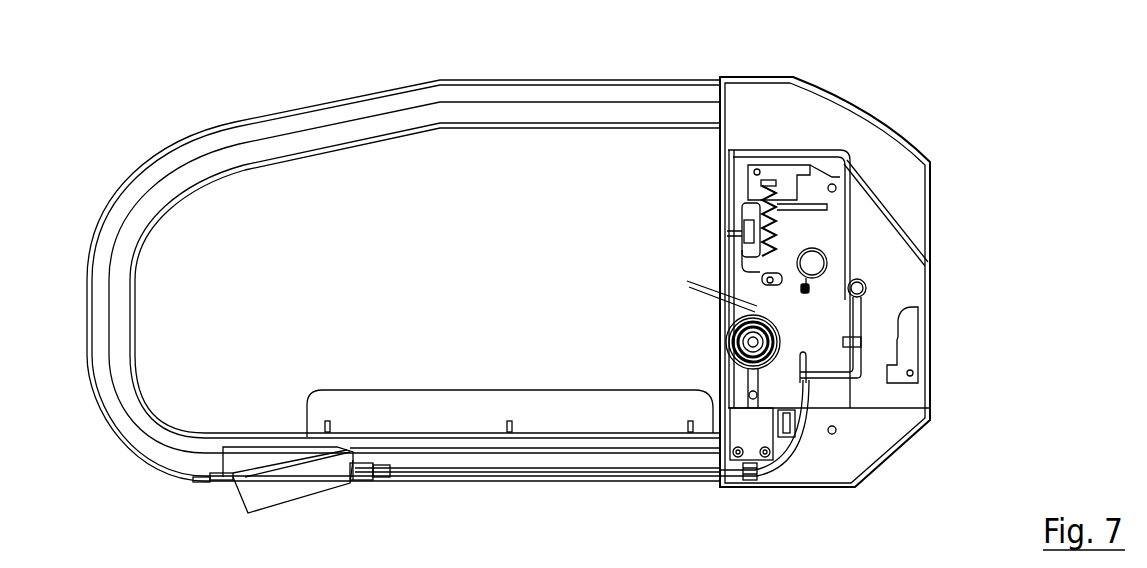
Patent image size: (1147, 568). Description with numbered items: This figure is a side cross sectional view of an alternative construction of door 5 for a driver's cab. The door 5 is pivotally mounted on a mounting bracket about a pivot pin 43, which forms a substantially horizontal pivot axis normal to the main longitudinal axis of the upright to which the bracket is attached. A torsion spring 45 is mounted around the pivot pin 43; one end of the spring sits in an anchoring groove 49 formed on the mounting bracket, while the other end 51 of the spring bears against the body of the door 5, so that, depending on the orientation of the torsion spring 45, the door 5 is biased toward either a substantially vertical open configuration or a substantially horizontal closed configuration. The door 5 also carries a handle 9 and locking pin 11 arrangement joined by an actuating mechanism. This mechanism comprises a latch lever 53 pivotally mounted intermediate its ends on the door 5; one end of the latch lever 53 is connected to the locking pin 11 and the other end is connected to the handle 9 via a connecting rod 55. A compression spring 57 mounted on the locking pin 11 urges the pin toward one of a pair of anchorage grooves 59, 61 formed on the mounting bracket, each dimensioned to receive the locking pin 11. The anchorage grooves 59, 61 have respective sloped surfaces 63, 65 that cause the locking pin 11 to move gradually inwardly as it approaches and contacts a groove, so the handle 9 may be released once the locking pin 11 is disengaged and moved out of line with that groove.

The door 5 is at (232, 137).
The handle 9 is at (246, 455).
The locking pin 11 is at (852, 216).
The pivot pin 43 is at (785, 322).
The torsion spring 45 is at (760, 312).
The anchoring groove 49 is at (803, 428).
The other end of the spring 51 is at (688, 283).
The latch lever 53 is at (787, 272).
The connecting rod 55 is at (790, 458).
The compression spring 57 is at (780, 252).
The anchorage groove 59 is at (781, 168).
The anchorage groove 61 is at (918, 342).
The sloped surface 63 is at (827, 168).
The sloped surface 65 is at (866, 294).